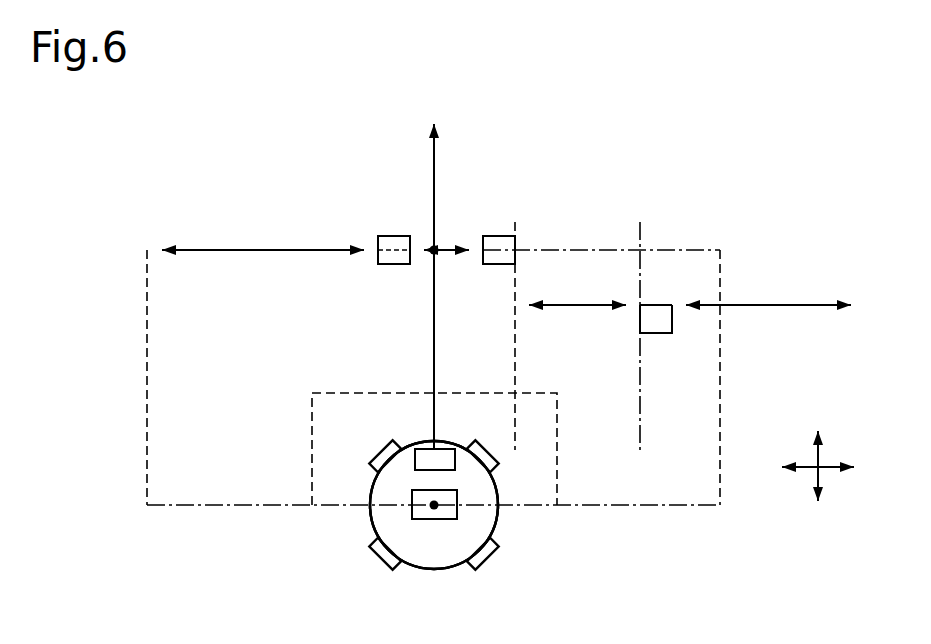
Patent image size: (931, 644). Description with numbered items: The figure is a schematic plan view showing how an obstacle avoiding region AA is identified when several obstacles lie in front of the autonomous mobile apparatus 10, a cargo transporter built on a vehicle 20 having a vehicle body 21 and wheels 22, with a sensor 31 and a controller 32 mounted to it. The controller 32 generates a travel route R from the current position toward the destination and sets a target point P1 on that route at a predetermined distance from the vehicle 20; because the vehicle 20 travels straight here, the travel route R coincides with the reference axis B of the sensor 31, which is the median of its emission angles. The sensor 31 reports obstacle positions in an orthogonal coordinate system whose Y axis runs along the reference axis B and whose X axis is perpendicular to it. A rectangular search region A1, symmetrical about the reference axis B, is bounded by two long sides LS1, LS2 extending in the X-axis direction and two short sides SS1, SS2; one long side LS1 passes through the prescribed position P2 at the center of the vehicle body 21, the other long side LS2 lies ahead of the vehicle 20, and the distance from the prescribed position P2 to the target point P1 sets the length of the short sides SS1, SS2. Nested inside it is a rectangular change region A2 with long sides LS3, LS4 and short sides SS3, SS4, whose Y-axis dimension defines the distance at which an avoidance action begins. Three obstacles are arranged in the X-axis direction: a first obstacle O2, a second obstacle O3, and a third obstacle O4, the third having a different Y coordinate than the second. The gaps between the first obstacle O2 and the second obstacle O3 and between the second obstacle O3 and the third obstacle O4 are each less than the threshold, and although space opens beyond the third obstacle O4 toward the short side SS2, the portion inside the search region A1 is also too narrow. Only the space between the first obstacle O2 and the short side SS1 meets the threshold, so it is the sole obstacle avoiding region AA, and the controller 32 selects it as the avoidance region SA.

The autonomous mobile apparatus 10 is at (450, 437).
The vehicle 20 is at (497, 488).
The vehicle body 21 is at (493, 518).
The wheels 22 is at (383, 450).
The sensor 31 is at (423, 449).
The controller 32 is at (434, 519).
The travel route R is at (437, 150).
The reference axis B is at (437, 288).
The target point P1 is at (436, 248).
The prescribed position P2 is at (432, 502).
The first obstacle O2 is at (393, 235).
The second obstacle O3 is at (497, 235).
The third obstacle O4 is at (655, 305).
The obstacle avoiding region AA is at (239, 249).
The avoidance region SA is at (263, 222).
The search region A1 is at (720, 277).
The change region A2 is at (557, 403).
The long side LS1 is at (658, 505).
The long side LS2 is at (607, 248).
The long side LS3 is at (347, 508).
The long side LS4 is at (338, 393).
The short side SS1 is at (147, 327).
The short side SS2 is at (720, 338).
The short side SS3 is at (312, 438).
The short side SS4 is at (557, 468).
The X axis X is at (833, 462).
The Y axis Y is at (820, 480).